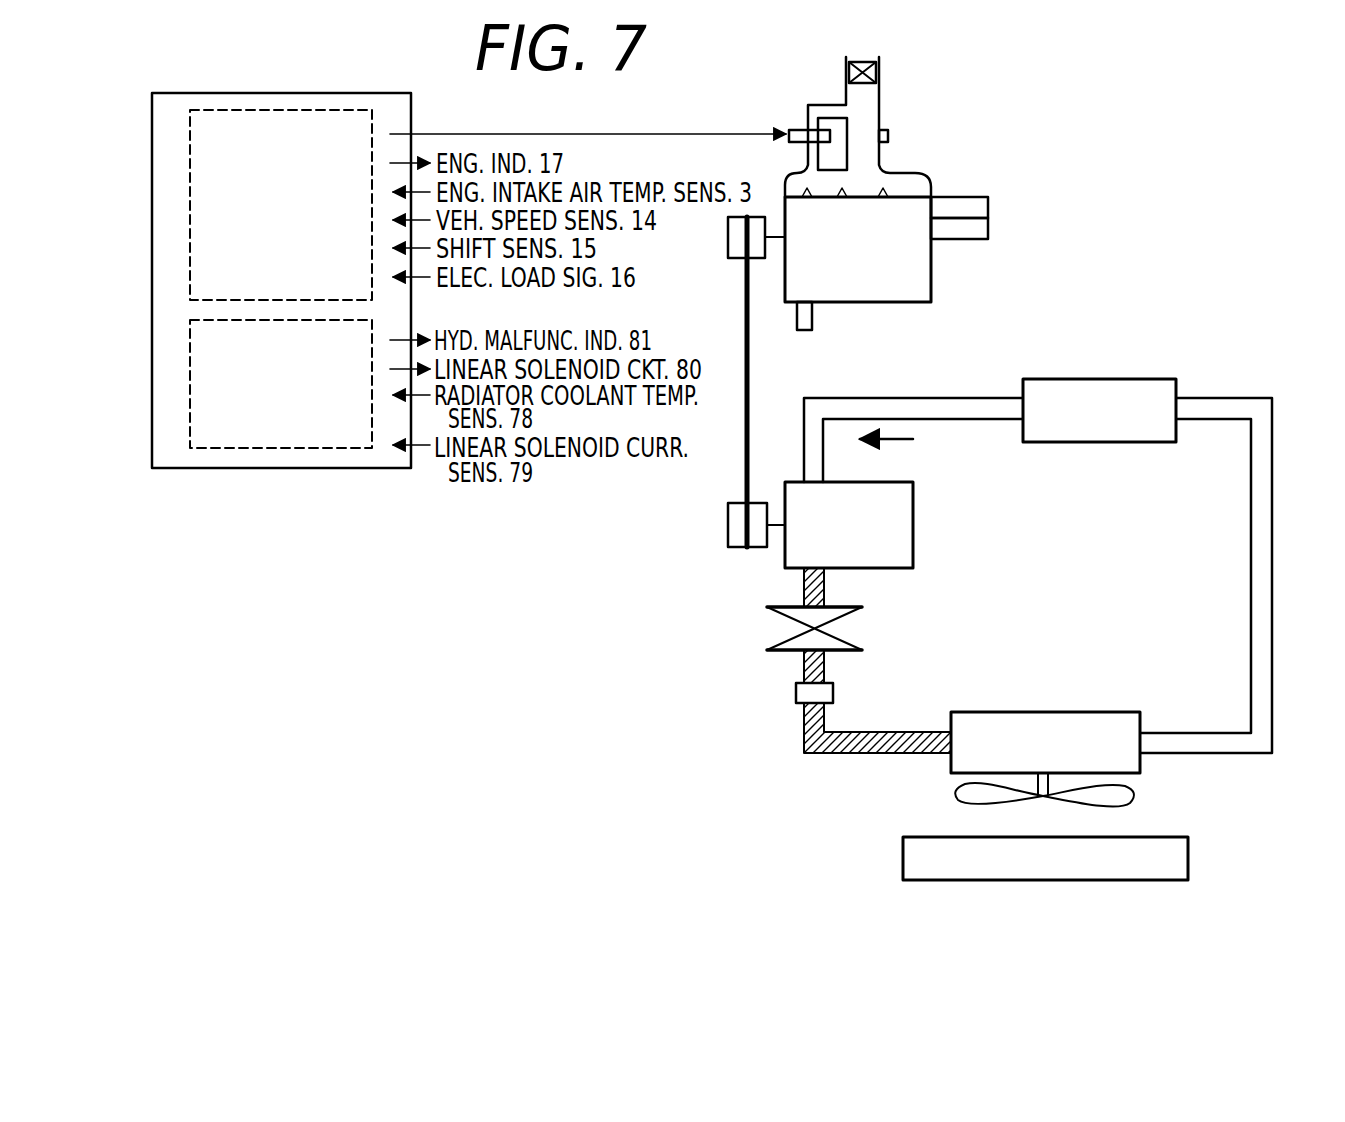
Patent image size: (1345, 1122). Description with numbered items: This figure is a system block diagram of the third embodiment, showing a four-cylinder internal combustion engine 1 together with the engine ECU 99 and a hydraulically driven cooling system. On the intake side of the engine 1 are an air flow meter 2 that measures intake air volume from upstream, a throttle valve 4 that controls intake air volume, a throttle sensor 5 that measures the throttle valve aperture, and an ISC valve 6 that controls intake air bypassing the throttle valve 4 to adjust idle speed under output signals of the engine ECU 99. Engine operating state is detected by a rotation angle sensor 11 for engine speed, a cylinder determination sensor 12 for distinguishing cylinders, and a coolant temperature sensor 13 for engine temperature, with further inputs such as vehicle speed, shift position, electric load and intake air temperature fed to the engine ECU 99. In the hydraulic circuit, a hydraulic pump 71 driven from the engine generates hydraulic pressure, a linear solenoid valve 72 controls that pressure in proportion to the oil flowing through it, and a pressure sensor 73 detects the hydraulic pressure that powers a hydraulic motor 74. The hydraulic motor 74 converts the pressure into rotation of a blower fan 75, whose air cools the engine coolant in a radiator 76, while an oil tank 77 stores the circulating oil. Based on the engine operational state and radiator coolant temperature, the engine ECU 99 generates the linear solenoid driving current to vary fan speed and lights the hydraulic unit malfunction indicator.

The four-cylinder internal combustion engine 1 is at (931, 268).
The air flow meter 2 is at (882, 72).
The throttle valve 4 is at (866, 146).
The throttle sensor 5 is at (890, 135).
The ISC valve 6 is at (800, 130).
The rotation angle sensor 11 is at (988, 208).
The cylinder determination sensor 12 is at (988, 226).
The coolant temperature sensor 13 is at (812, 320).
The hydraulic pump 71 is at (913, 525).
The linear solenoid valve 72 is at (757, 618).
The pressure sensor 73 is at (796, 700).
The hydraulic motor 74 is at (1067, 712).
The blower fan 75 is at (953, 800).
The radiator 76 is at (1188, 858).
The oil tank 77 is at (1142, 379).
The engine ECU 99 is at (268, 470).